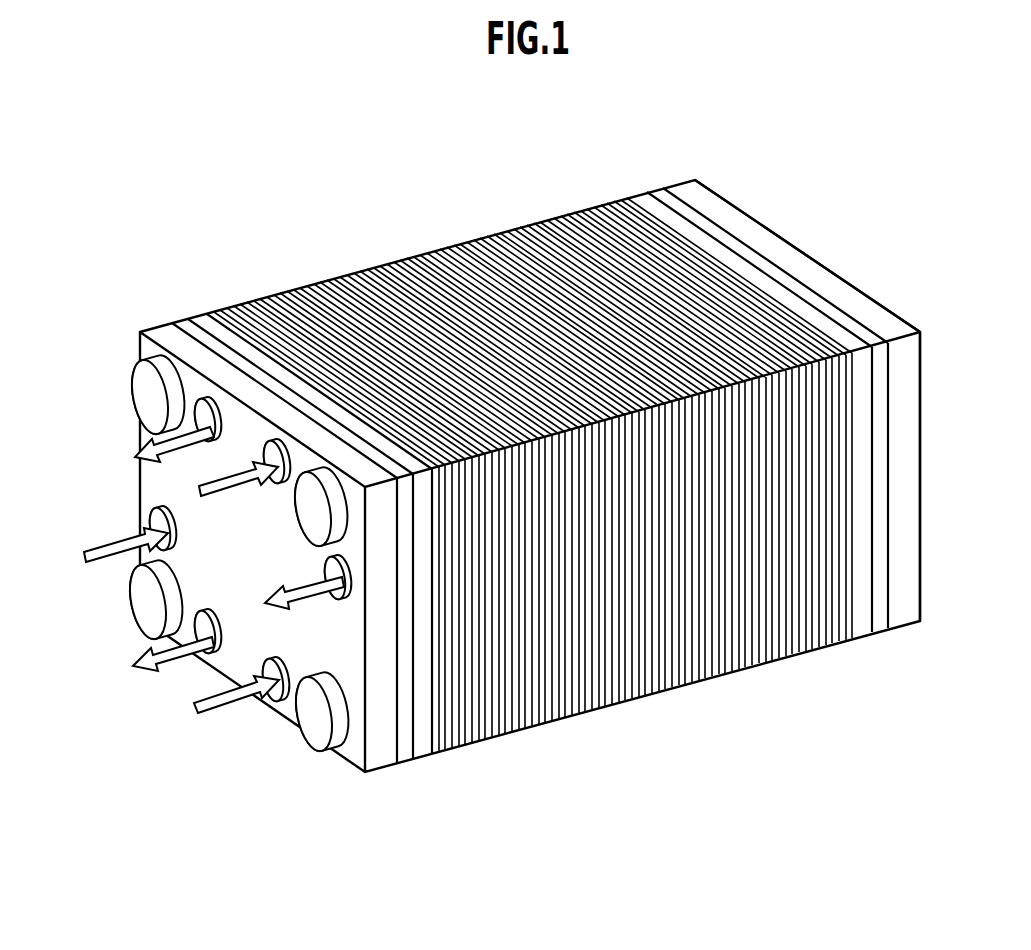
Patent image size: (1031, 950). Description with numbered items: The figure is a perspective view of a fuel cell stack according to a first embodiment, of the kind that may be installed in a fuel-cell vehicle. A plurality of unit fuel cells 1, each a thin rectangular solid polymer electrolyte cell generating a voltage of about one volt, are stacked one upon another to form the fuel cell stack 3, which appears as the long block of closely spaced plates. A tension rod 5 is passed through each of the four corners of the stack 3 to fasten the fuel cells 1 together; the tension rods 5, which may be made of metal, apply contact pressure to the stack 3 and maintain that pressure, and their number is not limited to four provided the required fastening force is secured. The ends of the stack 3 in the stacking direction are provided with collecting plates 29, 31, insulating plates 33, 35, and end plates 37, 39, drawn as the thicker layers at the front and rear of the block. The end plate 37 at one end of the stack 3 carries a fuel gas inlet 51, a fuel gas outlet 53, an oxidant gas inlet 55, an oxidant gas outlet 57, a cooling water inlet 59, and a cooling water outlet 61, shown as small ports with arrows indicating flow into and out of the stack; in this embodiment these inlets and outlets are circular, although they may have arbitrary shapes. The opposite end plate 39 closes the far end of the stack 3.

The unit fuel cell 1 is at (584, 212).
The fuel cell stack 3 is at (433, 763).
The tension rod 5 is at (138, 398).
The collecting plate 29 is at (423, 743).
The collecting plate 31 is at (864, 620).
The insulating plate 33 is at (405, 747).
The insulating plate 35 is at (882, 600).
The end plate 37 is at (355, 767).
The end plate 39 is at (908, 462).
The fuel gas inlet 51 is at (273, 447).
The fuel gas outlet 53 is at (205, 665).
The oxidant gas inlet 55 is at (152, 527).
The oxidant gas outlet 57 is at (328, 604).
The cooling water inlet 59 is at (272, 713).
The cooling water outlet 61 is at (207, 407).